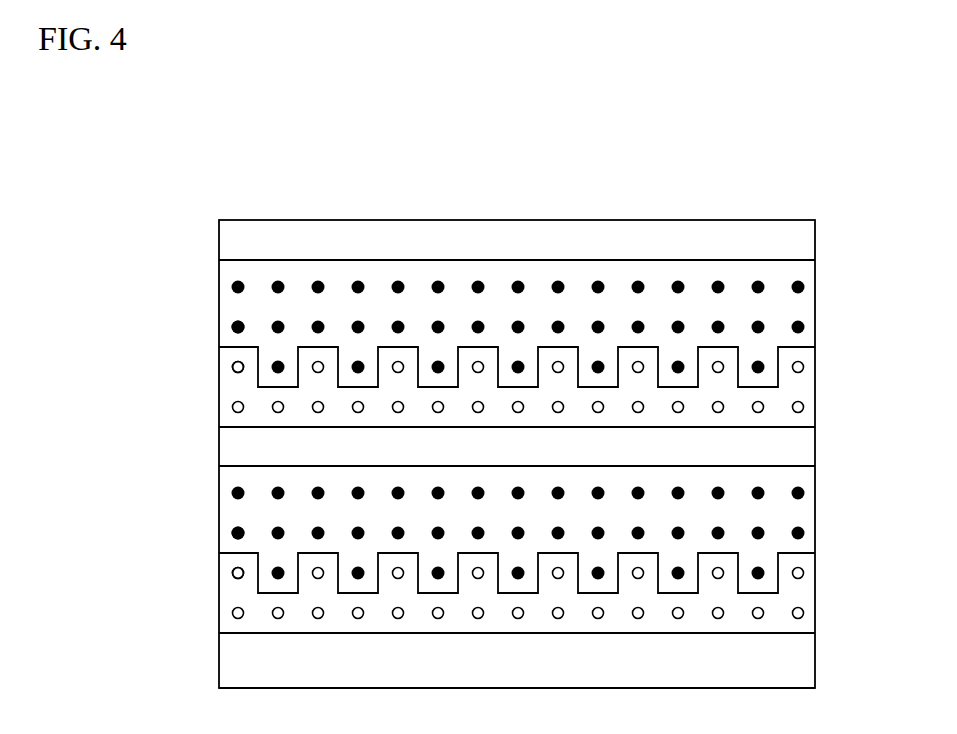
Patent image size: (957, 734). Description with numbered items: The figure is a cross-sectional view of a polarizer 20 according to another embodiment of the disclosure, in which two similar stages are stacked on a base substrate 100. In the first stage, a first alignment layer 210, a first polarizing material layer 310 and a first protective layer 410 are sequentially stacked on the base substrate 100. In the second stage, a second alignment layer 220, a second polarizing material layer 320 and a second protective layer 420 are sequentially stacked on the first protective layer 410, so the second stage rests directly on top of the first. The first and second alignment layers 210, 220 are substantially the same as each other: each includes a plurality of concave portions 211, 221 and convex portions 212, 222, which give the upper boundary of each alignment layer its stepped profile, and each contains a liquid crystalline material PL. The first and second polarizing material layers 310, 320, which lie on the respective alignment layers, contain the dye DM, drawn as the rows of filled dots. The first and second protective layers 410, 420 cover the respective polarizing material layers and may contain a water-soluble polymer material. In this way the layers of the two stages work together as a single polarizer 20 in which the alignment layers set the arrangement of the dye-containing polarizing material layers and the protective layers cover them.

The polarizer 20 is at (724, 188).
The base substrate 100 is at (805, 660).
The first alignment layer 210 is at (805, 623).
The concave portions 211 is at (766, 582).
The convex portions 212 is at (727, 553).
The second alignment layer 220 is at (805, 417).
The concave portions 221 is at (766, 376).
The convex portions 222 is at (727, 347).
The first polarizing material layer 310 is at (805, 510).
The second polarizing material layer 320 is at (805, 304).
The first protective layer 410 is at (805, 455).
The second protective layer 420 is at (805, 241).
The dye DM is at (235, 322).
The liquid crystalline material PL is at (232, 367).